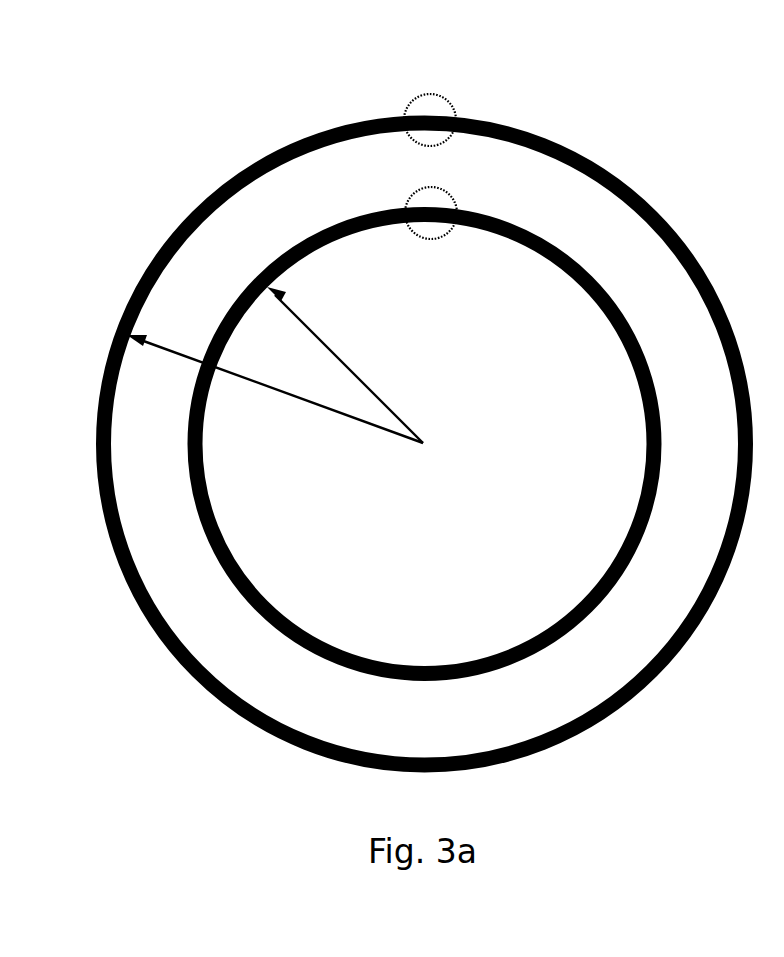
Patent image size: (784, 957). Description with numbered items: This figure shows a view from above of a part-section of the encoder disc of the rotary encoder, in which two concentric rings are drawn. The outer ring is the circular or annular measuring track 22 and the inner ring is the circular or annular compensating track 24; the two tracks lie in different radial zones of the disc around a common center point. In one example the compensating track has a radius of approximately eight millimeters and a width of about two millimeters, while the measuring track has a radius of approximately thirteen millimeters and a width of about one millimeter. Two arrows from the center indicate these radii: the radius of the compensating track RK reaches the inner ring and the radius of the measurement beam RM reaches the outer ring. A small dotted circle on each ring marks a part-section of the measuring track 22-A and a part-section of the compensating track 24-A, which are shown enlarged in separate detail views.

The measuring track 22 is at (493, 125).
The compensating track 24 is at (570, 253).
The part-section of the measuring track 22-A is at (453, 72).
The part-section of the compensating track 24-A is at (412, 198).
The radius of the compensating track RK is at (352, 370).
The radius of the measurement beam RM is at (295, 395).